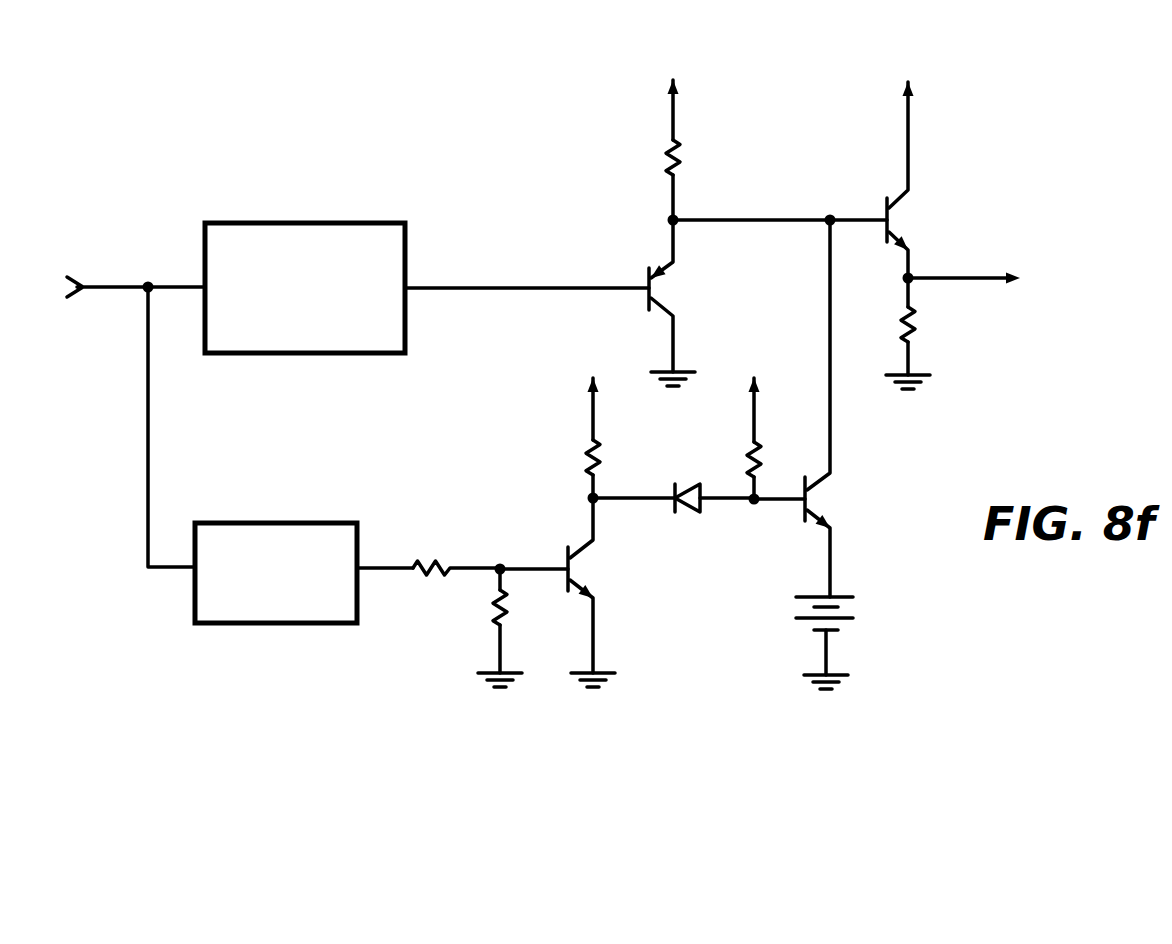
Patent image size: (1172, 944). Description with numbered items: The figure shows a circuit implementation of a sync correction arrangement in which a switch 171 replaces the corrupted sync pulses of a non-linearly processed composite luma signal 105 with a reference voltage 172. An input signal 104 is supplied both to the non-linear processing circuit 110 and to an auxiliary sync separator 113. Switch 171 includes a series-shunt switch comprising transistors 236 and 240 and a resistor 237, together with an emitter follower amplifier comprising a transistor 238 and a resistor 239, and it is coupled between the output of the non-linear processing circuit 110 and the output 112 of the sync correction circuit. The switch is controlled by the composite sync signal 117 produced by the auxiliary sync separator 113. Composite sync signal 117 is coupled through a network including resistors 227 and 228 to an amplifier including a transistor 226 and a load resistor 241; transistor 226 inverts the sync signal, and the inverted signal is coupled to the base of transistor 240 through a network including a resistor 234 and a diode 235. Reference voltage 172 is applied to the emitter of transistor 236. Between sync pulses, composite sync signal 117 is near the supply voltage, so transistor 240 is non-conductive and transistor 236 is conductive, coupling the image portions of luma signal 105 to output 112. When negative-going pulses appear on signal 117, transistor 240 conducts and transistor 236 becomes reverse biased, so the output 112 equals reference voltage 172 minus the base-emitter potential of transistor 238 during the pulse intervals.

The input terminal / video signal input 104 is at (111, 285).
The non-linear processing circuit 110 is at (302, 223).
The non-linearly processed composite luma signal 105 is at (560, 285).
The resistor 237 is at (680, 158).
The transistor 236 is at (680, 302).
The transistor 238 is at (908, 208).
The output 112 is at (965, 276).
The resistor 239 is at (925, 320).
The switch 171 is at (1004, 411).
The auxiliary sync separator 113 is at (249, 523).
The composite sync signal 117 is at (387, 566).
The resistor 227 is at (432, 562).
The resistor 228 is at (492, 623).
The load resistor 241 is at (585, 447).
The transistor 226 is at (586, 556).
The diode 235 is at (703, 512).
The resistor 234 is at (745, 448).
The transistor 240 is at (828, 487).
The reference voltage 172 is at (856, 643).